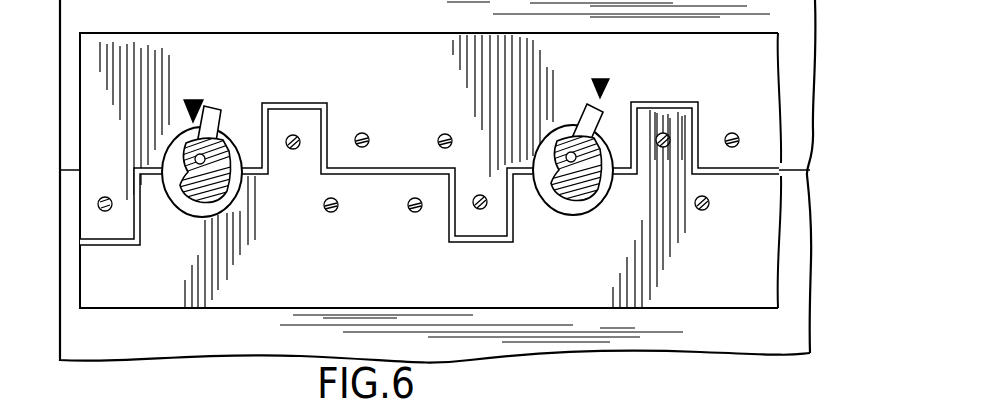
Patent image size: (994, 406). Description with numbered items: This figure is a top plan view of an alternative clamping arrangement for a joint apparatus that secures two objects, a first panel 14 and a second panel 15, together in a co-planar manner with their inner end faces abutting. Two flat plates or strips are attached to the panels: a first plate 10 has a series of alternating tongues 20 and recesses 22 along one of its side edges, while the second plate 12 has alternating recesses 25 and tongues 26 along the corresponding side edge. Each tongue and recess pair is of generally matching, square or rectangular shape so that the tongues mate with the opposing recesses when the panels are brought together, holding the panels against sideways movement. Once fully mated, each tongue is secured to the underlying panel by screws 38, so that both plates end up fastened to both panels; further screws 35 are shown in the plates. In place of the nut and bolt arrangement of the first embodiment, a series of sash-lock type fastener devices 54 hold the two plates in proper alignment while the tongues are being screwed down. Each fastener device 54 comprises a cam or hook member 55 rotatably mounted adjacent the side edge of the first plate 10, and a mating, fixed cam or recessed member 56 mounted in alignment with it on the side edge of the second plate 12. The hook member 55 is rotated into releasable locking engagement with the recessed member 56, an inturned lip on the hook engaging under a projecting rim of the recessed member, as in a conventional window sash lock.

The first plate 10 is at (95, 75).
The second plate 12 is at (95, 268).
The first panel 14 is at (800, 23).
The second panel 15 is at (793, 242).
The tongue 20 is at (492, 237).
The recess 22 is at (670, 101).
The recess 25 is at (447, 223).
The tongue 26 is at (313, 130).
The fastening screws 35 is at (418, 125).
The screw 38 is at (290, 136).
The sash-lock type fastener device 54 is at (197, 102).
The cam or hook member 55 is at (222, 187).
The fixed cam or recessed member 56 is at (202, 213).